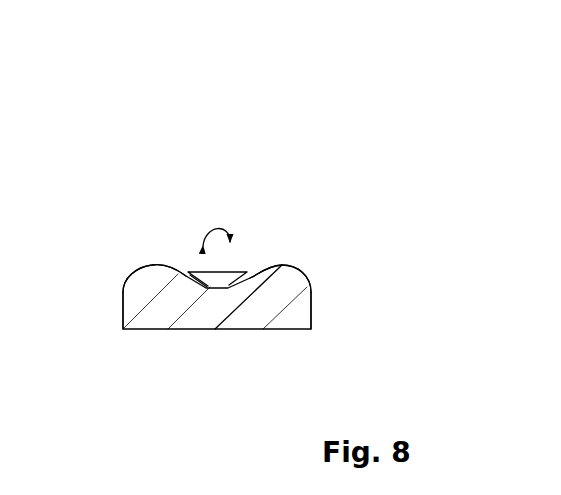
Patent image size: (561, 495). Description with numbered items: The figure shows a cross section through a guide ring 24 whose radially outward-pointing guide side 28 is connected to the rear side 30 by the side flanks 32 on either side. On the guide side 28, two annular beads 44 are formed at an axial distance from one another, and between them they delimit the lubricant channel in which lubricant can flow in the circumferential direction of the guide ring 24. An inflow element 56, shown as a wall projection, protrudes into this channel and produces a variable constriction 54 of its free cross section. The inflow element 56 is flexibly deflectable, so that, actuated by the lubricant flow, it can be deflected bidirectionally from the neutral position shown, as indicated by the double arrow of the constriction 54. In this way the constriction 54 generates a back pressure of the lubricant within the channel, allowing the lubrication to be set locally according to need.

The guide ring 24 is at (370, 176).
The guide side 28 is at (257, 264).
The rear side 30 is at (200, 330).
The side flanks 32 is at (122, 293).
The annular beads 44 is at (126, 289).
The variable constriction 54 is at (240, 216).
The inflow element 56 is at (206, 279).